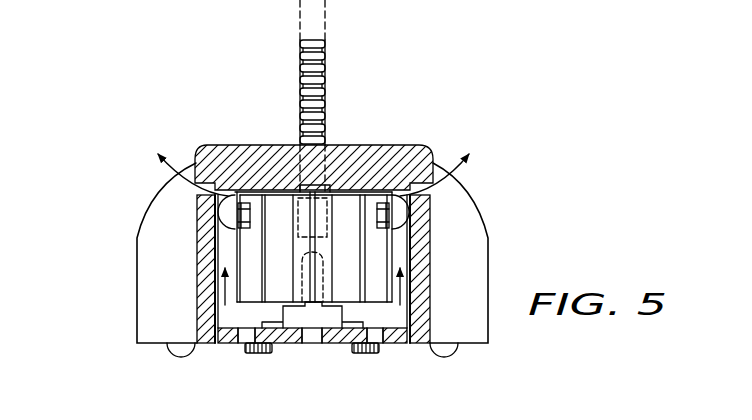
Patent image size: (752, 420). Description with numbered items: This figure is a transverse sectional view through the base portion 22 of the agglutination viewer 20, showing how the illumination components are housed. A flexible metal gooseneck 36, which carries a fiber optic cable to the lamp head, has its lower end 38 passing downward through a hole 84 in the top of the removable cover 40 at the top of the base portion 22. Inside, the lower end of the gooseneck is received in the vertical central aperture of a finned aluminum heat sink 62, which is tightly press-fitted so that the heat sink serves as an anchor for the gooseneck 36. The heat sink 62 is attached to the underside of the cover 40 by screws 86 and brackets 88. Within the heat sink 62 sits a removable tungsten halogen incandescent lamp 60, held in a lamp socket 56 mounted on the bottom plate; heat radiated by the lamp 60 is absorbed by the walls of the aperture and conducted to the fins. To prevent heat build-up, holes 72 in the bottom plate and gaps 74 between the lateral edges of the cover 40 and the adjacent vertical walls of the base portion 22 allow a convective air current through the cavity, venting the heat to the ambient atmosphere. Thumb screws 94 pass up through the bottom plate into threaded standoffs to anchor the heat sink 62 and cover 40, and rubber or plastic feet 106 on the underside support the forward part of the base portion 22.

The agglutination viewer 20 is at (493, 97).
The base portion 22 is at (430, 256).
The flexible metal gooseneck 36 is at (327, 18).
The lower end of the gooseneck 38 is at (326, 90).
The removable cover 40 is at (398, 145).
The lamp socket 56 is at (297, 312).
The incandescent lamp 60 is at (323, 277).
The finned aluminum heat sink 62 is at (220, 257).
The holes 72 is at (240, 345).
The gaps 74 is at (208, 145).
The hole 84 is at (283, 165).
The screws 86 is at (397, 222).
The brackets 88 is at (226, 220).
The thumb screws 94 is at (265, 354).
The feet 106 is at (172, 352).